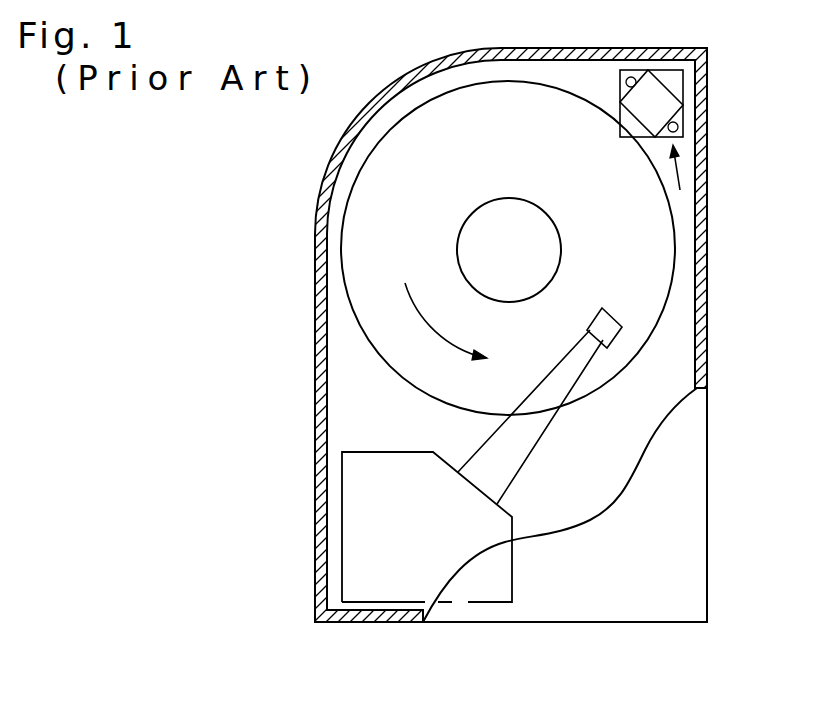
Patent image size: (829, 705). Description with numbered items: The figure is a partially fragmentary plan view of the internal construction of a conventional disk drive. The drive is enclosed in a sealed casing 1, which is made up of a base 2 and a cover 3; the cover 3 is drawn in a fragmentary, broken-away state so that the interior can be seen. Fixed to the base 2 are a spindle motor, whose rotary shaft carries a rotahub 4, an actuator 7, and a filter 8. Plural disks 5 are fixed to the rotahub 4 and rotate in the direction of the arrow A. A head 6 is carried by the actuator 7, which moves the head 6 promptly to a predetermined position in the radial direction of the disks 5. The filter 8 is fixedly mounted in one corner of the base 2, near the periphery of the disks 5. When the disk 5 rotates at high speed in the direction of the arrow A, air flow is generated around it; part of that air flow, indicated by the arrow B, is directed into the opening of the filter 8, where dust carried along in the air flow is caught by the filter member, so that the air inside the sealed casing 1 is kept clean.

The sealed casing 1 is at (659, 627).
The base 2 is at (528, 73).
The cover 3 is at (690, 450).
The rotahub 4 is at (473, 212).
The disks 5 is at (363, 213).
The head 6 is at (615, 315).
The actuator 7 is at (360, 513).
The filter 8 is at (664, 87).
The arrow indicating disk rotation direction A is at (410, 347).
The arrow indicating air flow B is at (678, 173).